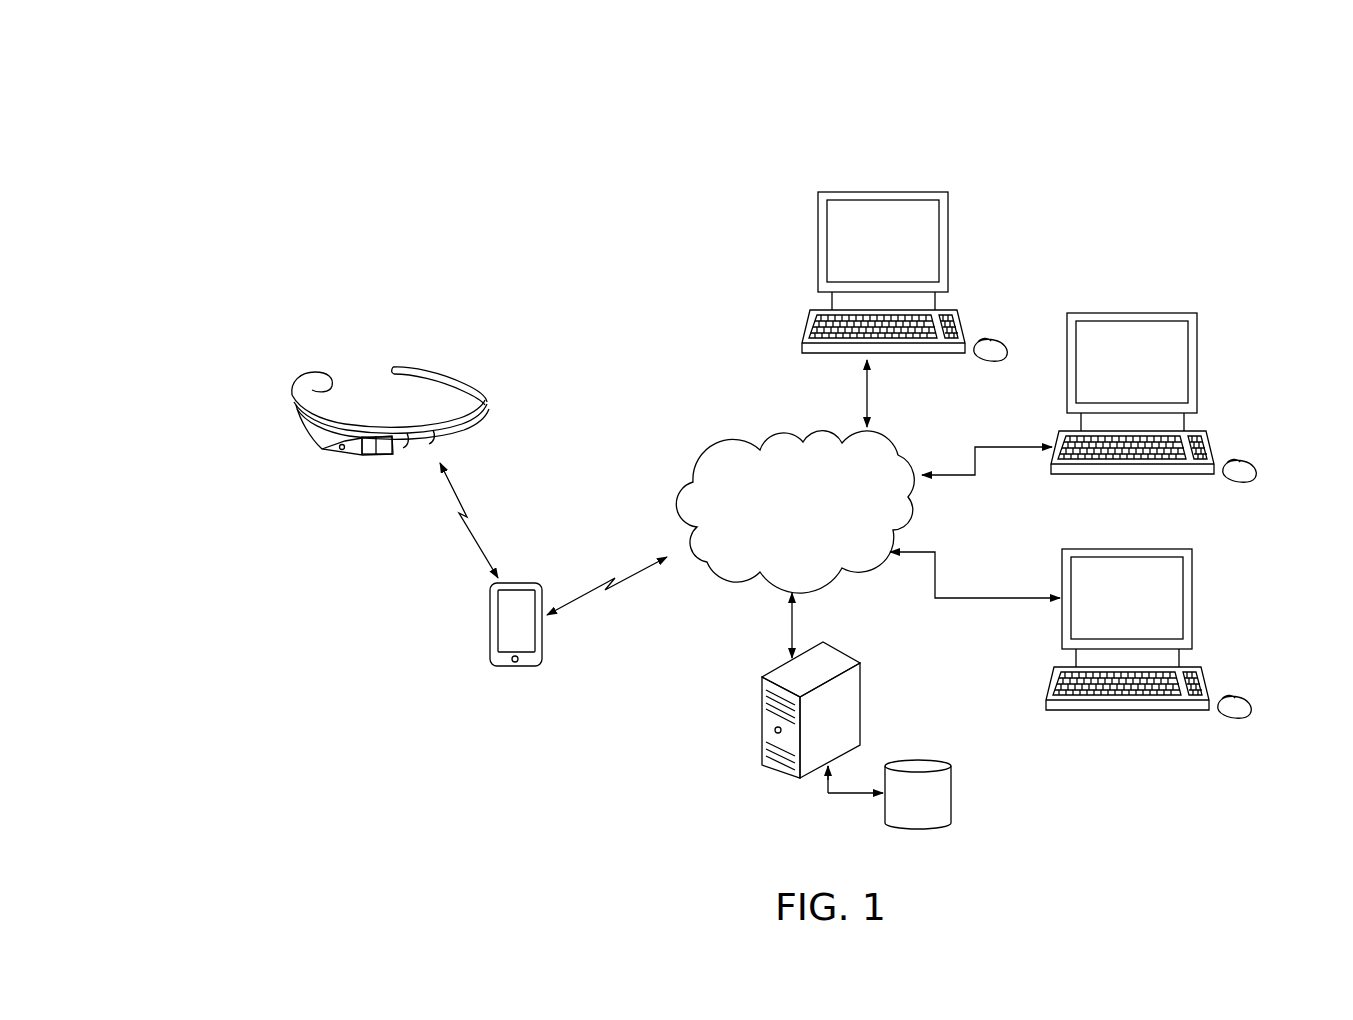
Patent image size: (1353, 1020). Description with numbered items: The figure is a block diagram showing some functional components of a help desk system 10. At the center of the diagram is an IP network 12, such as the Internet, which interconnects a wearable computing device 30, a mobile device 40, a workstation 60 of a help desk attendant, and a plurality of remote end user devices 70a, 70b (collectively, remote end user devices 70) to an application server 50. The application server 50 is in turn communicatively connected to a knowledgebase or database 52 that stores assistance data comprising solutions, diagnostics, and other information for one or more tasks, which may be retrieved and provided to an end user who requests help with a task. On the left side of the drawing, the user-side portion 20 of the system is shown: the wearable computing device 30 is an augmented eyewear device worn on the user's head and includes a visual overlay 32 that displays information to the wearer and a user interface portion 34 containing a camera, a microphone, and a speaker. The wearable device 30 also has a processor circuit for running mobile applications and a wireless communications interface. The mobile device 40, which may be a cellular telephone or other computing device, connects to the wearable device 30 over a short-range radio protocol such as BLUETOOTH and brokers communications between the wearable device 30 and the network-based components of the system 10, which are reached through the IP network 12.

The help desk system 10 is at (527, 147).
The IP network 12 is at (784, 562).
The wearable computing system 20 is at (250, 295).
The wearable computing device 30 is at (408, 355).
The visual overlay 32 is at (375, 455).
The user interface portion 34 is at (337, 450).
The mobile device 40 is at (482, 636).
The application server 50 is at (875, 681).
The database 52 is at (952, 797).
The workstation 60 is at (1210, 572).
The remote end user devices 70 is at (1072, 220).
The remote end user device 70a is at (881, 192).
The remote end user device 70b is at (1133, 313).